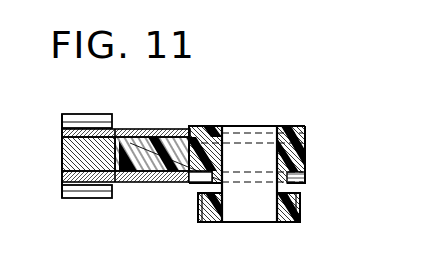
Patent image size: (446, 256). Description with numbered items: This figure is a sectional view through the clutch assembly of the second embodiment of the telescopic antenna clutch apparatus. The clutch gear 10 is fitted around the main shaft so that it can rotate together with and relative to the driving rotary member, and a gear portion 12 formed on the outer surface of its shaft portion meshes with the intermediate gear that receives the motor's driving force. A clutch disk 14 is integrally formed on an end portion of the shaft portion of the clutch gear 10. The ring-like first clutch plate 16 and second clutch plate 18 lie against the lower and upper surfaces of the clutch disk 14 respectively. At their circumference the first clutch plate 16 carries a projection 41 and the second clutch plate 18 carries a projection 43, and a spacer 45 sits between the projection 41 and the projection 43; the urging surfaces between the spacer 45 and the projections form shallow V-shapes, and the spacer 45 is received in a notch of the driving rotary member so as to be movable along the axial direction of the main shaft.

The clutch gear 10 is at (305, 160).
The gear portion 12 is at (302, 208).
The clutch disk 14 is at (197, 125).
The first clutch plate 16 is at (140, 183).
The second clutch plate 18 is at (150, 127).
The projection 41 is at (78, 192).
The projection 43 is at (82, 122).
The spacer 45 is at (62, 157).